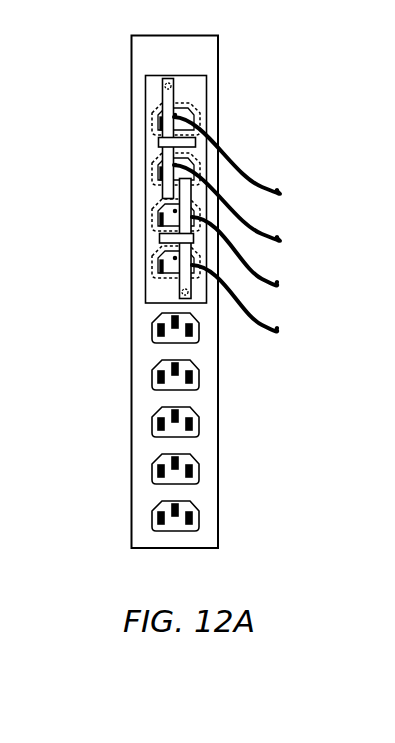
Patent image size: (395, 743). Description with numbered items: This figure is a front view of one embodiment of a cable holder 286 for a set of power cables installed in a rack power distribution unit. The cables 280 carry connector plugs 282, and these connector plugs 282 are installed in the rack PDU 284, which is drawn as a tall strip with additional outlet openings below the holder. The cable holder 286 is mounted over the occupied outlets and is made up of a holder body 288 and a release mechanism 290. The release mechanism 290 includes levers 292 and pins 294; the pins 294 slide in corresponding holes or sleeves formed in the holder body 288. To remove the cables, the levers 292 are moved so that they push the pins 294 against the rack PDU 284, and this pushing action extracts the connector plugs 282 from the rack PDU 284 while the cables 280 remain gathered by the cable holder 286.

The cables 280 is at (260, 180).
The connector plugs 282 is at (195, 116).
The rack PDU 284 is at (191, 66).
The cable holder 286 is at (167, 168).
The holder body 288 is at (193, 75).
The release mechanism 290 is at (141, 138).
The levers 292 is at (163, 117).
The pins 294 is at (168, 86).